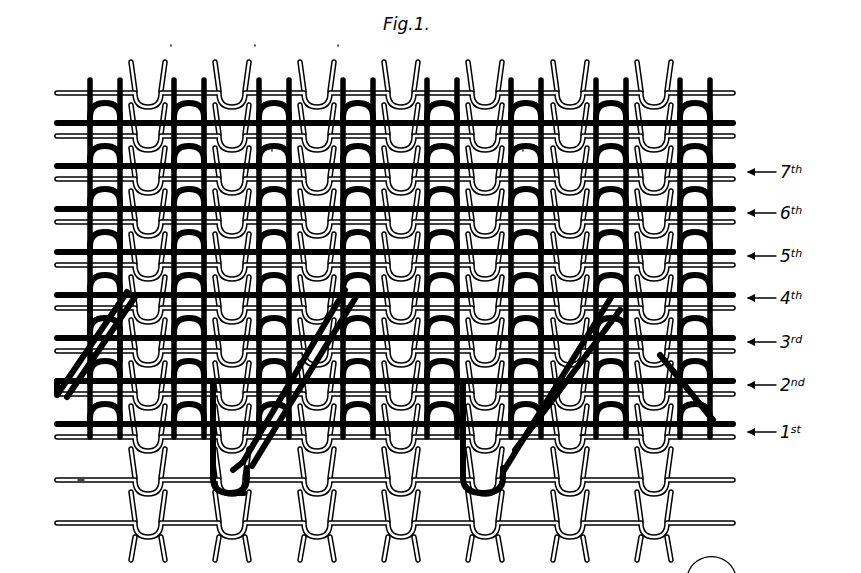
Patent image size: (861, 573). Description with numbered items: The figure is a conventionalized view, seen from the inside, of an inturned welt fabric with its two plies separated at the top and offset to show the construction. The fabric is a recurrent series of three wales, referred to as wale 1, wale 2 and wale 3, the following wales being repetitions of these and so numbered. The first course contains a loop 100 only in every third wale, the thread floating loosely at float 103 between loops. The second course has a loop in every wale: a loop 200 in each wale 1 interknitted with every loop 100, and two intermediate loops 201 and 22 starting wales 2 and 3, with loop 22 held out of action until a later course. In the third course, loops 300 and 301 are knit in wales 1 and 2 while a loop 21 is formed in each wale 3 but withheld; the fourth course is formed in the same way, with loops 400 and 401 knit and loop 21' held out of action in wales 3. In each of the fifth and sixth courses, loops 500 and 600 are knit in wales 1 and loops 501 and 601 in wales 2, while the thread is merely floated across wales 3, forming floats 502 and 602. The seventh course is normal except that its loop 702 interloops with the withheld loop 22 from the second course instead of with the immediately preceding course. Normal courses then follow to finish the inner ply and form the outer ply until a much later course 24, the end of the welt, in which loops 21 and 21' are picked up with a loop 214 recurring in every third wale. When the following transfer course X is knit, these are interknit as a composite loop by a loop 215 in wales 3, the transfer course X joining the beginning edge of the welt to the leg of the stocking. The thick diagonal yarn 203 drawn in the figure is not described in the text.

The wale 1 is at (195, 72).
The wale 2 is at (616, 72).
The wale 3 is at (279, 72).
The loop 22 is at (272, 150).
The loop 21 is at (306, 380).
The loop 21' is at (433, 384).
The course 24 is at (193, 440).
The loop 214 is at (242, 462).
The loop 215 is at (246, 497).
The yarn float 203 is at (680, 380).
The float 103 is at (580, 436).
The loop 100 is at (715, 392).
The loop 200 is at (715, 348).
The loop 300 is at (715, 305).
The loop 400 is at (715, 262).
The loop 500 is at (713, 215).
The loop 600 is at (700, 172).
The loop 201 is at (150, 257).
The loop 301 is at (148, 214).
The loop 401 is at (86, 207).
The loop 501 is at (84, 165).
The loop 601 is at (88, 125).
The float 502 is at (150, 331).
The float 602 is at (200, 238).
The loop 702 is at (250, 184).
The transfer course X is at (80, 478).